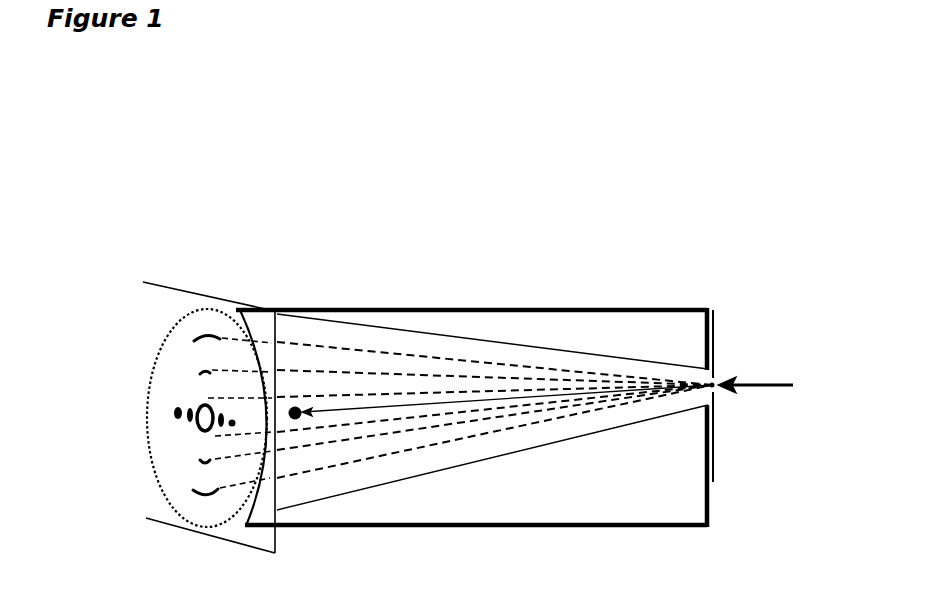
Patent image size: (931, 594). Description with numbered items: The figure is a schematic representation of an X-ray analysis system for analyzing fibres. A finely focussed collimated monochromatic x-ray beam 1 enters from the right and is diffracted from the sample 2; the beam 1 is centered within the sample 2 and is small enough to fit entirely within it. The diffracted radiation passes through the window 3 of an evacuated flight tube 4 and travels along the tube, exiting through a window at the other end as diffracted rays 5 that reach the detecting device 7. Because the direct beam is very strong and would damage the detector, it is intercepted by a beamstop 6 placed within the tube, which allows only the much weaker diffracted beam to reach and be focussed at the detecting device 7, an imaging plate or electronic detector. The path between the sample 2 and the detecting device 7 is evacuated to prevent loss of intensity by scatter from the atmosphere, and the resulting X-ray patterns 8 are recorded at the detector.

The x-ray beam 1 is at (755, 400).
The sample 2 is at (722, 326).
The window 3 is at (708, 394).
The evacuated flight tube 4 is at (393, 307).
The diffracted rays 5 is at (408, 438).
The beamstop 6 is at (302, 422).
The detecting device 7 is at (168, 283).
The X-ray patterns 8 is at (170, 431).